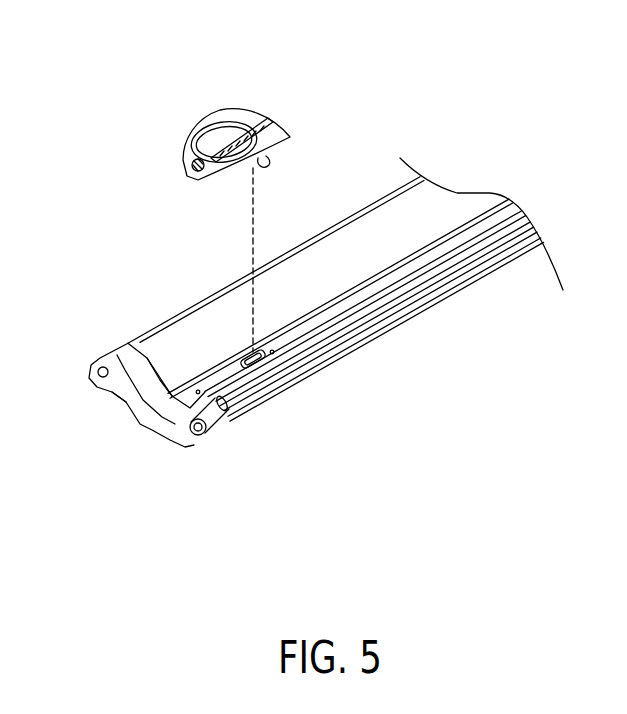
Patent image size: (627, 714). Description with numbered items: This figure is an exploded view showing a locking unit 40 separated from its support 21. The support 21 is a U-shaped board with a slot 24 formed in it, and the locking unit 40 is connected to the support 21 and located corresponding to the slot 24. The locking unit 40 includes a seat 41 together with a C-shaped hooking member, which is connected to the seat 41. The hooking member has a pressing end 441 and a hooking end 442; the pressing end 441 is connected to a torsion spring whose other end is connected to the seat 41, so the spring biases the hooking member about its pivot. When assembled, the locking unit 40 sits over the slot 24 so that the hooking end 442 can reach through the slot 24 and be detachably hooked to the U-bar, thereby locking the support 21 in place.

The support 21 is at (450, 292).
The slot 24 is at (260, 365).
The locking unit 40 is at (226, 109).
The seat 41 is at (198, 123).
The pressing end 441 is at (223, 128).
The hooking end 442 is at (273, 147).